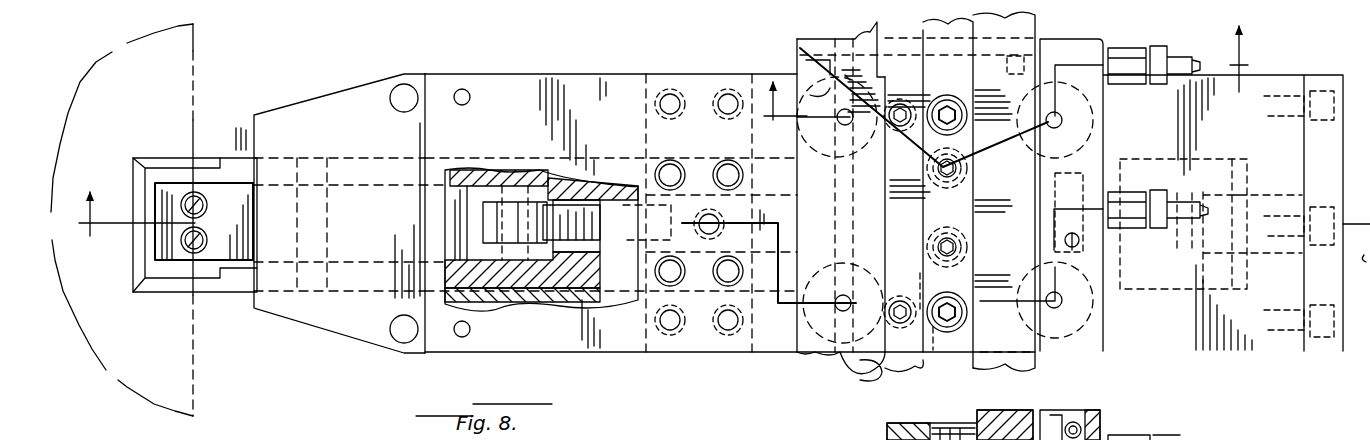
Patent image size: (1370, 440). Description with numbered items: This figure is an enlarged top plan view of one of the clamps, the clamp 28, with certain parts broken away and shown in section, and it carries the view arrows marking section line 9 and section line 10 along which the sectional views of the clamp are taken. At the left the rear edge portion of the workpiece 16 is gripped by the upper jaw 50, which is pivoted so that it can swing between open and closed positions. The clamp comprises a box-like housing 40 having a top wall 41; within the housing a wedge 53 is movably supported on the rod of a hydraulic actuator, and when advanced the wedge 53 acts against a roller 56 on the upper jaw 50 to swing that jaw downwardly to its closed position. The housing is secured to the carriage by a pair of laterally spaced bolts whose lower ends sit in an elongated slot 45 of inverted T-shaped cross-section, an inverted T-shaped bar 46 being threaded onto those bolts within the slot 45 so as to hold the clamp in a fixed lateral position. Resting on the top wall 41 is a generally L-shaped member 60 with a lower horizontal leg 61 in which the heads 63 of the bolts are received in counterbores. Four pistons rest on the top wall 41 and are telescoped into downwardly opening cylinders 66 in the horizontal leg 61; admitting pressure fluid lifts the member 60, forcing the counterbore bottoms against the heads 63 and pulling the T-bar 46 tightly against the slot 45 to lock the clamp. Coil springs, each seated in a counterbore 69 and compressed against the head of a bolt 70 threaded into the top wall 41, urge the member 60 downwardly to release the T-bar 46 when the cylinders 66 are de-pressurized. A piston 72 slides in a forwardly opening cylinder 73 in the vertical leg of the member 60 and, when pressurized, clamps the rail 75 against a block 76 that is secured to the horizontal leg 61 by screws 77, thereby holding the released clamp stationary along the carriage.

The section line 9— 9 is at (137, 231).
The section line 10— 10 is at (1006, 95).
The workpiece 16 is at (196, 48).
The clamp 28 is at (362, 349).
The box-like housing 40 is at (553, 74).
The top wall 41 is at (570, 113).
The elongated slot 45 is at (884, 370).
The inverted T-shaped bar 46 is at (868, 80).
The upper jaw 50 is at (215, 193).
The wedge 53 is at (593, 212).
The roller 56 is at (504, 212).
The L-shaped member 60 is at (797, 41).
The lower horizontal leg 61 is at (801, 224).
The bolt heads 63 is at (898, 285).
The cylinders 66 is at (1072, 336).
The counterbore 69 is at (978, 204).
The bolt 70 is at (970, 250).
The piston 72 is at (1060, 412).
The forwardly opening cylinder 73 is at (1075, 405).
The rail 75 is at (1048, 34).
The block 76 is at (870, 428).
The screws 77 is at (937, 425).